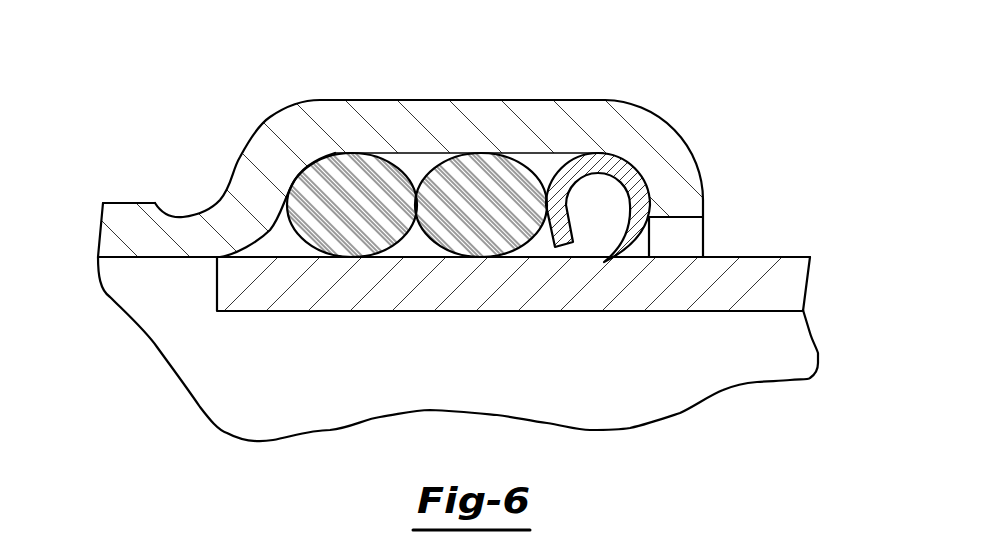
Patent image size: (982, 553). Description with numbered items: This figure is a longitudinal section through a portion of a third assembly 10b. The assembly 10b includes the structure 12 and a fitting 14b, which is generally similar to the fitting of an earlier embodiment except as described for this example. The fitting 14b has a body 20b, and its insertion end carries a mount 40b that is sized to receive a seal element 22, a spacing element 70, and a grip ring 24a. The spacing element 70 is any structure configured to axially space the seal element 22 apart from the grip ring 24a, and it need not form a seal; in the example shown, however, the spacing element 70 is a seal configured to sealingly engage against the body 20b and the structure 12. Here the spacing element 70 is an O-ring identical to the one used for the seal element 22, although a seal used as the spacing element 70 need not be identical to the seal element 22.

The third assembly 10b is at (764, 170).
The structure 12 is at (781, 270).
The fitting 14b is at (127, 217).
The body 20b is at (110, 237).
The seal element 22 is at (318, 167).
The grip ring 24a is at (596, 160).
The mount 40b is at (477, 103).
The spacing element 70 is at (462, 247).